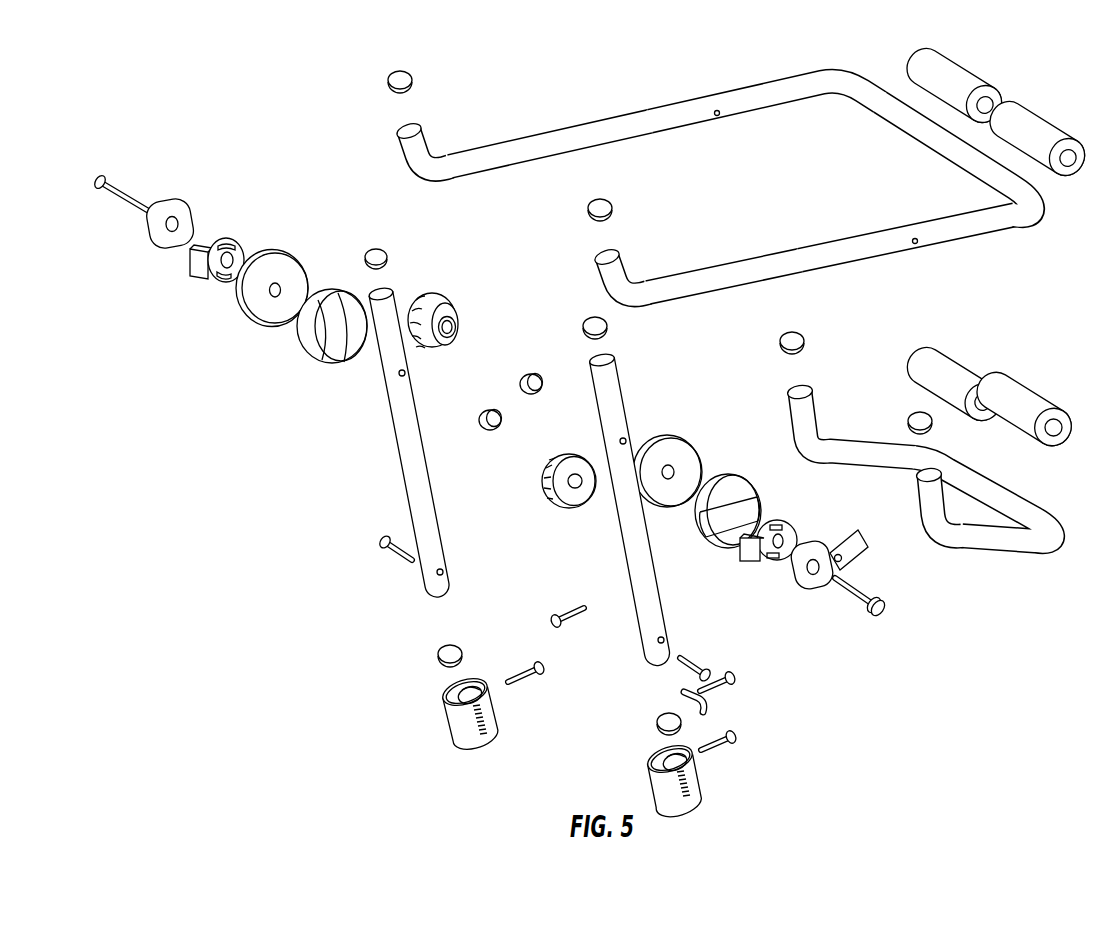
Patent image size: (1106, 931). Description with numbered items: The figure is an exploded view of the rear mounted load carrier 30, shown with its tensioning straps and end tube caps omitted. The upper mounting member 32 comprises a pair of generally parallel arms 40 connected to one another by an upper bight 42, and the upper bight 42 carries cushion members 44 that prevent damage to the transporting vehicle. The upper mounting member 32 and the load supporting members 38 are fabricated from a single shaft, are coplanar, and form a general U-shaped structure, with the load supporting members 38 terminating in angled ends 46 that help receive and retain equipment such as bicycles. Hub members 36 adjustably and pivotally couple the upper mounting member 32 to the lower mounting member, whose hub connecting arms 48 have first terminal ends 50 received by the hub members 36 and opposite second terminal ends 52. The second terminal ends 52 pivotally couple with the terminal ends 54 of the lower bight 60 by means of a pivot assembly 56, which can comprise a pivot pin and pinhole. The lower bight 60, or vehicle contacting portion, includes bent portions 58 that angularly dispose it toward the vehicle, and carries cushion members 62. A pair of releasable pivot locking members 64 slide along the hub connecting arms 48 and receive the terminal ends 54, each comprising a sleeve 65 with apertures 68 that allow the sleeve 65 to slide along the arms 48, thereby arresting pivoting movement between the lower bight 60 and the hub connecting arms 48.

The rear mounted load carrier 30 is at (726, 150).
The upper mounting member 32 is at (726, 158).
The hub member 36 is at (490, 396).
The load supporting member 38 is at (625, 199).
The arm 40 is at (844, 155).
The upper bight 42 is at (952, 158).
The cushion member 44 is at (1004, 109).
The angled end 46 is at (500, 209).
The hub connecting arm 48 is at (507, 475).
The first terminal end 50 is at (648, 252).
The second terminal end 52 is at (523, 638).
The terminal end 54 is at (892, 418).
The pivot assembly 56 is at (657, 544).
The bent portion 58 is at (911, 483).
The lower bight 60 is at (989, 499).
The cushion member 62 is at (993, 392).
The releasable pivot locking member 64 is at (612, 713).
The sleeve 65 is at (547, 744).
The aperture 68 is at (568, 730).